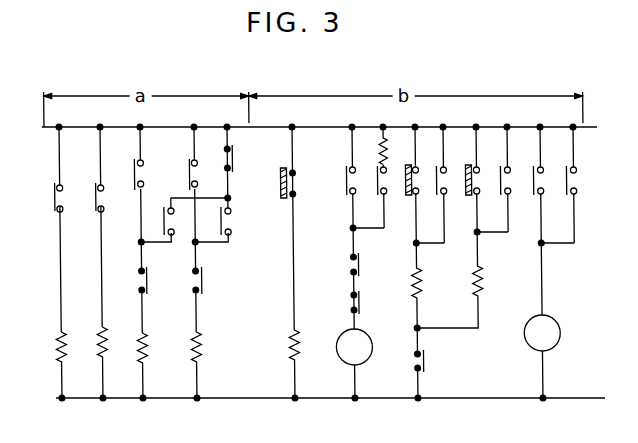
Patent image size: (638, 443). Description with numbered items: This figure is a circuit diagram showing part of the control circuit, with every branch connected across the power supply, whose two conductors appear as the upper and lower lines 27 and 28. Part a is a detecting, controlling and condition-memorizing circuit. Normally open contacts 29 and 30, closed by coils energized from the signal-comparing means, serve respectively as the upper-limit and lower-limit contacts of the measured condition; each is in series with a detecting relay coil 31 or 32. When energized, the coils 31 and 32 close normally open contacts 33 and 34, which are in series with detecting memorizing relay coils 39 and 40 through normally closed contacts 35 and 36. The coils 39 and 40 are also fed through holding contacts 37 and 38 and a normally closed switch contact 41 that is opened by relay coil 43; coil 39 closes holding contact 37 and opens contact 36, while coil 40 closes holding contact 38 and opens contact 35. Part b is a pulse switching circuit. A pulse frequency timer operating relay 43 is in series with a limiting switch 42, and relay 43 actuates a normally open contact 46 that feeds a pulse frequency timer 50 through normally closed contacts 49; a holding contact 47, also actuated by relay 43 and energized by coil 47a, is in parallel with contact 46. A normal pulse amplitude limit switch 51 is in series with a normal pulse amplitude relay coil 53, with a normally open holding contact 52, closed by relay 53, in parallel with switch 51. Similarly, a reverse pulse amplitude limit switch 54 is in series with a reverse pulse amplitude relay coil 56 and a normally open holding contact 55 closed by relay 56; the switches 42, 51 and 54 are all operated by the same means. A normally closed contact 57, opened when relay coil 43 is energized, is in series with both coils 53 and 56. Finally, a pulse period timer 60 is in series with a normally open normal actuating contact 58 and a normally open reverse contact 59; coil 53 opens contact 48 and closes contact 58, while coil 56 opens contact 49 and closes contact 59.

The supply line 27 is at (50, 127).
The return line 28 is at (54, 400).
The normally open contact 29 is at (54, 201).
The normally open contact 30 is at (95, 201).
The detecting relay coil 31 is at (56, 334).
The detecting relay coil 32 is at (97, 330).
The normally open contact 33 is at (134, 177).
The normally open contact 34 is at (189, 176).
The normally closed contact 35 is at (141, 281).
The normally closed contact 36 is at (197, 281).
The holding contact 37 is at (163, 216).
The holding contact 38 is at (221, 226).
The detecting memorizing relay coil 39 is at (137, 334).
The detecting memorizing relay coil 40 is at (191, 340).
The normally closed switch contact 41 is at (233, 162).
The limiting switch 42 is at (279, 180).
The pulse frequency timer operating relay 43 is at (287, 344).
The normally open contact 46 is at (345, 180).
The holding contact 47 is at (376, 182).
The coil 47a is at (382, 140).
The contact 48 is at (352, 263).
The normally closed contact 49 is at (352, 301).
The pulse frequency timer 50 is at (348, 340).
The normal pulse amplitude limit switch 51 is at (404, 178).
The normally open holding contact 52 is at (436, 180).
The normal pulse amplitude relay coil 53 is at (410, 280).
The reverse pulse amplitude limit switch 54 is at (464, 178).
The normally open holding contact 55 is at (499, 180).
The reverse pulse amplitude relay coil 56 is at (472, 280).
The normally closed contact 57 is at (424, 361).
The normally open normal actuating contact 58 is at (532, 180).
The normally open reverse contact 59 is at (565, 180).
The pulse period timer 60 is at (534, 330).